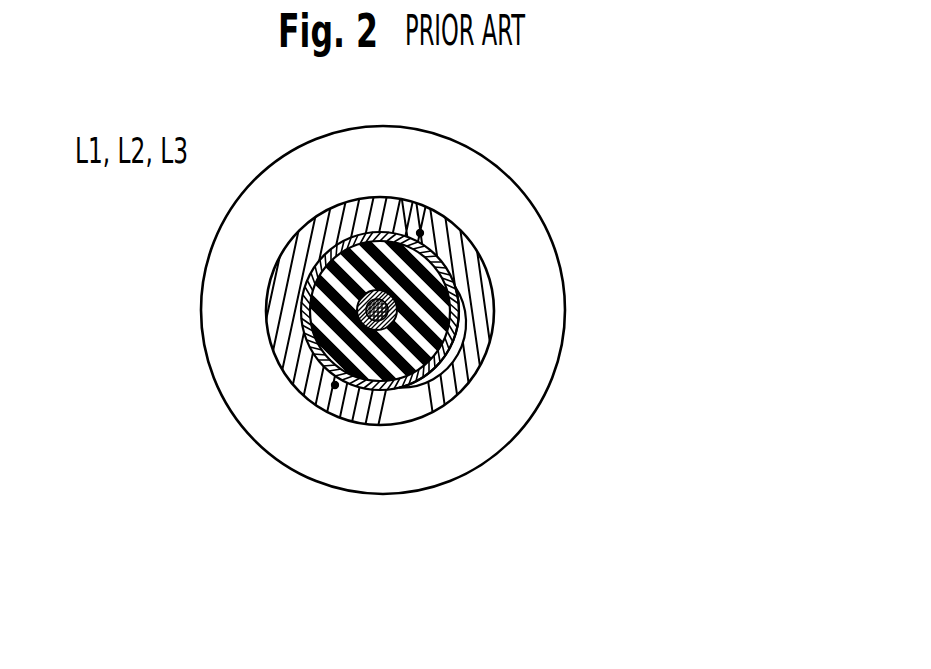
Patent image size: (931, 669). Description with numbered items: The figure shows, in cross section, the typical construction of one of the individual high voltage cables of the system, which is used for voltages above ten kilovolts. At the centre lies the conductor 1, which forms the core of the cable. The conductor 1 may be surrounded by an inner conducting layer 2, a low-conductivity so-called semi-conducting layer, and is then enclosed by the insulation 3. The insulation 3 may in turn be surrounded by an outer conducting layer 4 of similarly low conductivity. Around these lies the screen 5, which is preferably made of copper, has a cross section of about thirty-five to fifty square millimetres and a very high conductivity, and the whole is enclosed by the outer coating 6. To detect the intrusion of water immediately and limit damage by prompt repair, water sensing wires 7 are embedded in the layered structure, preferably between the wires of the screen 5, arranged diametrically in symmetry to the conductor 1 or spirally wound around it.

The conductor 1 is at (345, 288).
The inner conducting layer 2 is at (345, 343).
The insulation 3 is at (455, 316).
The outer conducting layer 4 is at (462, 366).
The screen 5 is at (445, 393).
The outer coating 6 is at (423, 458).
The water sensing wires 7 is at (448, 217).